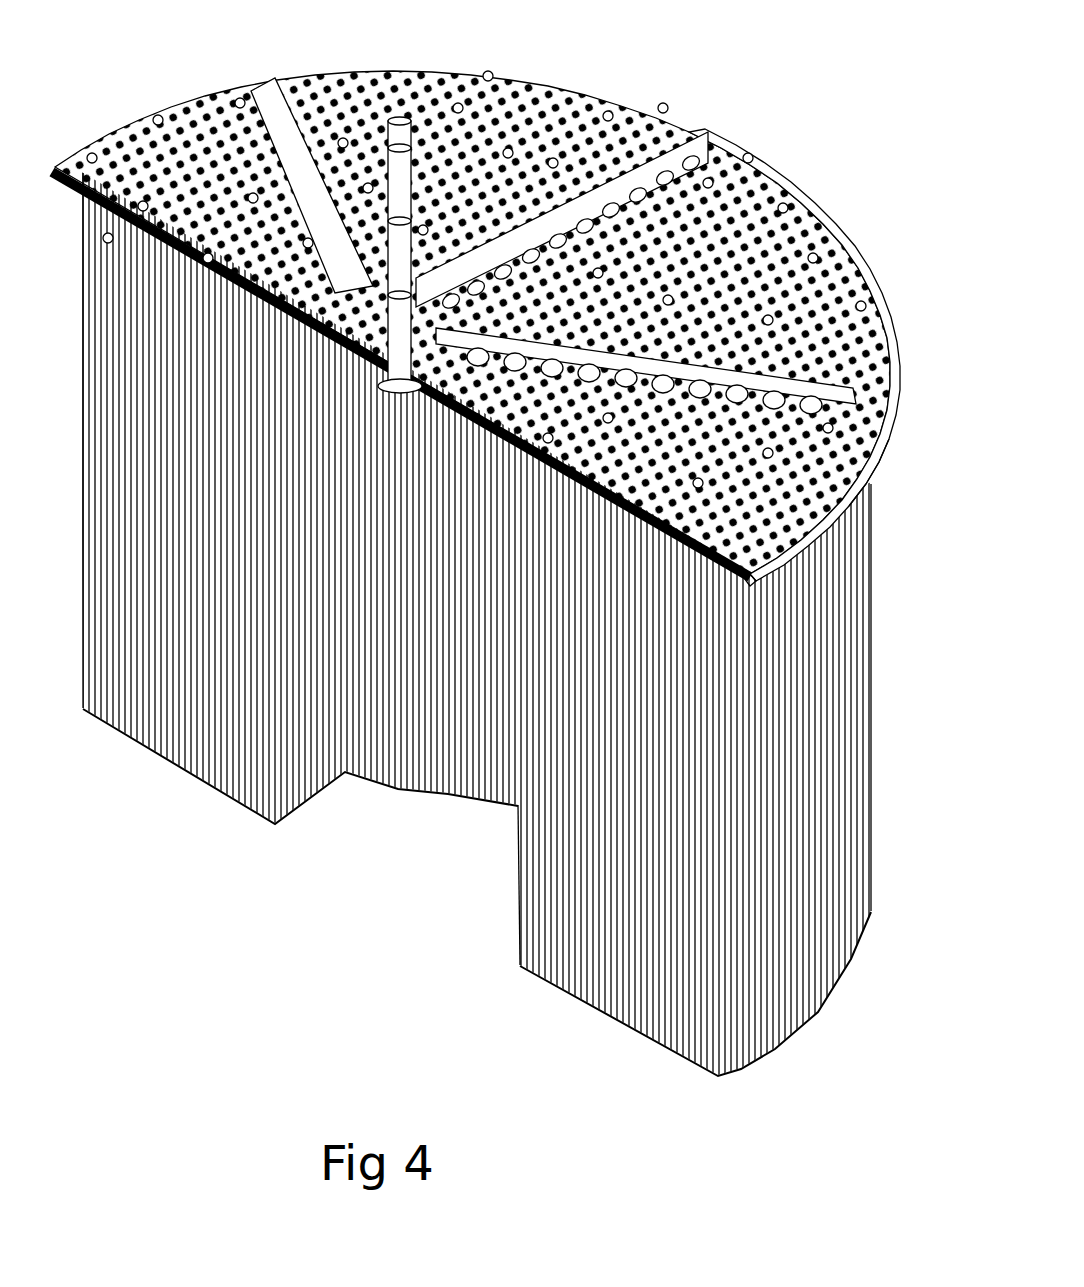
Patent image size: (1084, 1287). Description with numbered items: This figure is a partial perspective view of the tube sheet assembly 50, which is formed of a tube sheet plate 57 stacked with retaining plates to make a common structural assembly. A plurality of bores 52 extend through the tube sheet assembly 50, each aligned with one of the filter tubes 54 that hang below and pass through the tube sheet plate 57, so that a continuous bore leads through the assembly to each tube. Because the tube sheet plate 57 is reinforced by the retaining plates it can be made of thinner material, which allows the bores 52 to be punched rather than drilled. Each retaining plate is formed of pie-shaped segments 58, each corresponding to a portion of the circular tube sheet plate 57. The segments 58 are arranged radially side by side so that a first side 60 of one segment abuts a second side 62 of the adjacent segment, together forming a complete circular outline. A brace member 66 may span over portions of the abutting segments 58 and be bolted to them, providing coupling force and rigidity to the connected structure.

The tube sheet assembly 50 is at (686, 74).
The bores 52 is at (816, 245).
The filter tubes 54 is at (508, 915).
The tube sheet plate 57 is at (871, 345).
The segments 58 is at (518, 78).
The first side 60 is at (859, 440).
The second side 62 is at (864, 464).
The brace member 66 is at (696, 130).